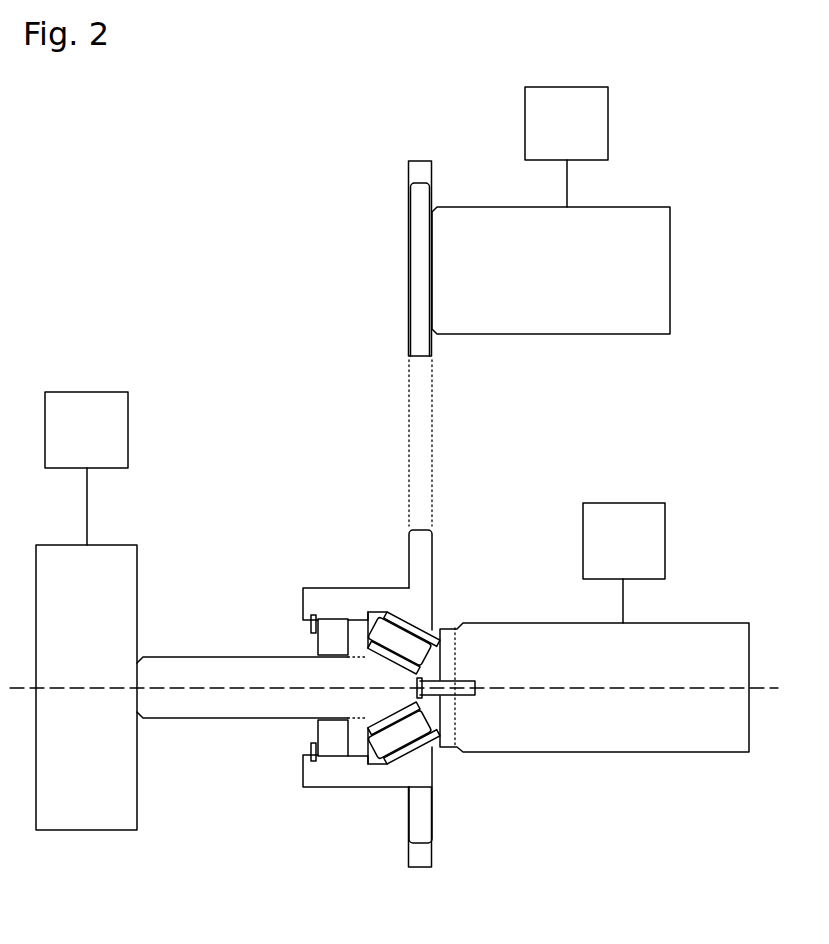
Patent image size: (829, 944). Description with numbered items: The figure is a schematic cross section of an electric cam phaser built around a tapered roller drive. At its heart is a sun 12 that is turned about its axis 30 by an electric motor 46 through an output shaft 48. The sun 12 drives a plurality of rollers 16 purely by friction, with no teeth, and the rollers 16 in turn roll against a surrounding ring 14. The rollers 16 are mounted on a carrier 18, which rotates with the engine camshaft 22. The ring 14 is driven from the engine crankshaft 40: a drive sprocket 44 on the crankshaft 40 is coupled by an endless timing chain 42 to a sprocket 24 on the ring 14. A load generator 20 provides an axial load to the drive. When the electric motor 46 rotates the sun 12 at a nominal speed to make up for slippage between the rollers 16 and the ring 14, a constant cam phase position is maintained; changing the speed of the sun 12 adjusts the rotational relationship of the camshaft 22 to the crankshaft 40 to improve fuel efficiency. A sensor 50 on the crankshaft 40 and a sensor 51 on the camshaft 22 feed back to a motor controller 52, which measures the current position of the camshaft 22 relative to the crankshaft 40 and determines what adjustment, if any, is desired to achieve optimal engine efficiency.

The sun 12 is at (368, 712).
The ring 14 is at (418, 757).
The rollers 16 is at (413, 745).
The carrier 18 is at (443, 660).
The load generator 20 is at (330, 642).
The camshaft 22 is at (585, 673).
The sprocket 24 is at (422, 560).
The axis 30 is at (395, 674).
The engine crankshaft 40 is at (534, 285).
The timing chain 42 is at (419, 174).
The drive sprocket 44 is at (420, 292).
The electric motor 46 is at (71, 622).
The output shaft 48 is at (208, 700).
The sensor 50 is at (553, 137).
The sensor 51 is at (610, 555).
The motor controller 52 is at (73, 445).